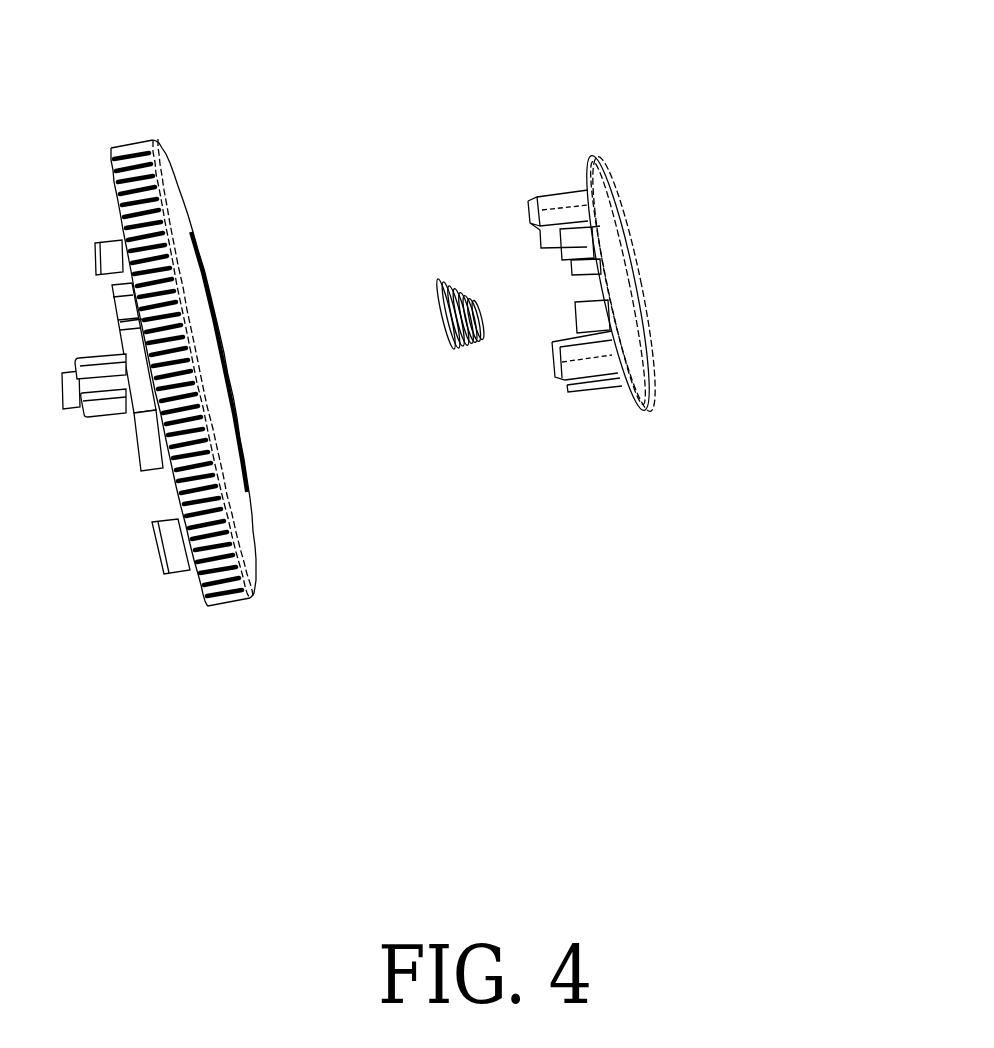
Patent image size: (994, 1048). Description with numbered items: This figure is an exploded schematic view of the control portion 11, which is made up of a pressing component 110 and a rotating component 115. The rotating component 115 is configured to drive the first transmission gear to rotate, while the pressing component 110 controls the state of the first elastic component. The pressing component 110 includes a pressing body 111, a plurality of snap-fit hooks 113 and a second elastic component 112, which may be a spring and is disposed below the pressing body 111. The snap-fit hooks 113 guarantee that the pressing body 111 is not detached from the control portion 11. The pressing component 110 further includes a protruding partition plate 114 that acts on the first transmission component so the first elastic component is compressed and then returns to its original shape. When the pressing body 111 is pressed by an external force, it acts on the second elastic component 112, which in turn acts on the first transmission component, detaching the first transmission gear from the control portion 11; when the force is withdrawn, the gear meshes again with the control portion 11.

The control portion 11 is at (486, 390).
The pressing component 110 is at (465, 343).
The pressing body 111 is at (625, 287).
The second elastic component 112 is at (437, 281).
The snap-fit hooks 113 is at (530, 195).
The protruding partition plate 114 is at (578, 240).
The rotating component 115 is at (224, 500).